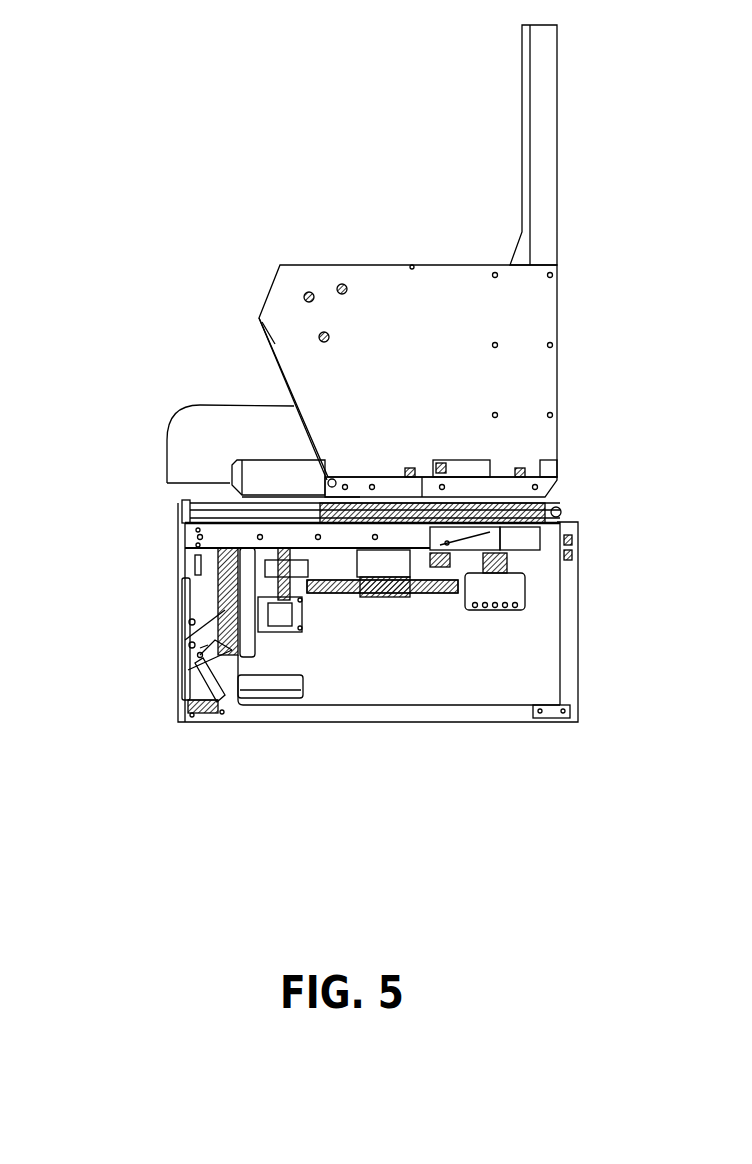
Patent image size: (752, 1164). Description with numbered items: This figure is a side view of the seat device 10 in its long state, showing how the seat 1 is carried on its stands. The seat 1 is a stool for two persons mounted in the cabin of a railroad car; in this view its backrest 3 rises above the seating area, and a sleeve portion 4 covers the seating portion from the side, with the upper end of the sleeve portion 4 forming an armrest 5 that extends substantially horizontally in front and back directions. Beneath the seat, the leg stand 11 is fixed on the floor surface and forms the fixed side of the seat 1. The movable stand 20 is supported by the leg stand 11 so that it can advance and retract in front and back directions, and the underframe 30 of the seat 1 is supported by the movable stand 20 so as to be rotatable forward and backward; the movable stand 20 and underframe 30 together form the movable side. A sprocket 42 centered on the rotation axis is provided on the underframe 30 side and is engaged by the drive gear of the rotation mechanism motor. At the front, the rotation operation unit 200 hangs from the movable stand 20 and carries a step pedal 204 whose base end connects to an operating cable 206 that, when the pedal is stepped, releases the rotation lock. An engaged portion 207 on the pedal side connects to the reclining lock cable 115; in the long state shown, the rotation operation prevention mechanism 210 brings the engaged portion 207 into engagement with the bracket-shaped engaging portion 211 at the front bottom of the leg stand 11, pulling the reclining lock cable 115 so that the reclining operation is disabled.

The seat 1 is at (403, 188).
The seat device 10 is at (428, 78).
The backrest 3 is at (555, 68).
The sleeve portion 4 is at (303, 368).
The armrest 5 is at (328, 265).
The underframe 30 is at (547, 492).
The movable stand 20 is at (190, 512).
The leg stand 11 is at (578, 620).
The rotation operation unit 200 is at (165, 597).
The step pedal 204 is at (207, 610).
The operating cable 206 is at (215, 623).
The engaged portion 207 is at (190, 690).
The rotation operation prevention mechanism 210 is at (190, 688).
The engaging portion 211 is at (204, 646).
The reclining lock cable 115 is at (220, 712).
The sprocket 42 is at (433, 590).